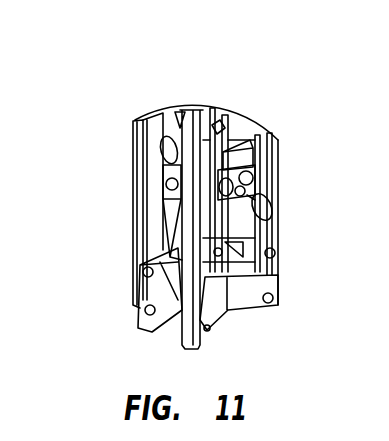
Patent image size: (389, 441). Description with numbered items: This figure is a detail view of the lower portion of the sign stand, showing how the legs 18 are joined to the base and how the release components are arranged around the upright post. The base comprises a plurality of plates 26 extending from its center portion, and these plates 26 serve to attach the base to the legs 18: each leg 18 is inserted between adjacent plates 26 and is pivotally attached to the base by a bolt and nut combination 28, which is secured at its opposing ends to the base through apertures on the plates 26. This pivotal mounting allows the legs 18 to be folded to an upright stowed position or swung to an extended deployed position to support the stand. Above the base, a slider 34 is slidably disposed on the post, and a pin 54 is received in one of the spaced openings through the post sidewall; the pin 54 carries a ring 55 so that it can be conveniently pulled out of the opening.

The legs 18 is at (190, 128).
The slider 34 is at (232, 160).
The pin 54 is at (247, 190).
The ring 55 is at (270, 214).
The plates 26 is at (160, 292).
The bolt and nut combination 28 is at (148, 312).